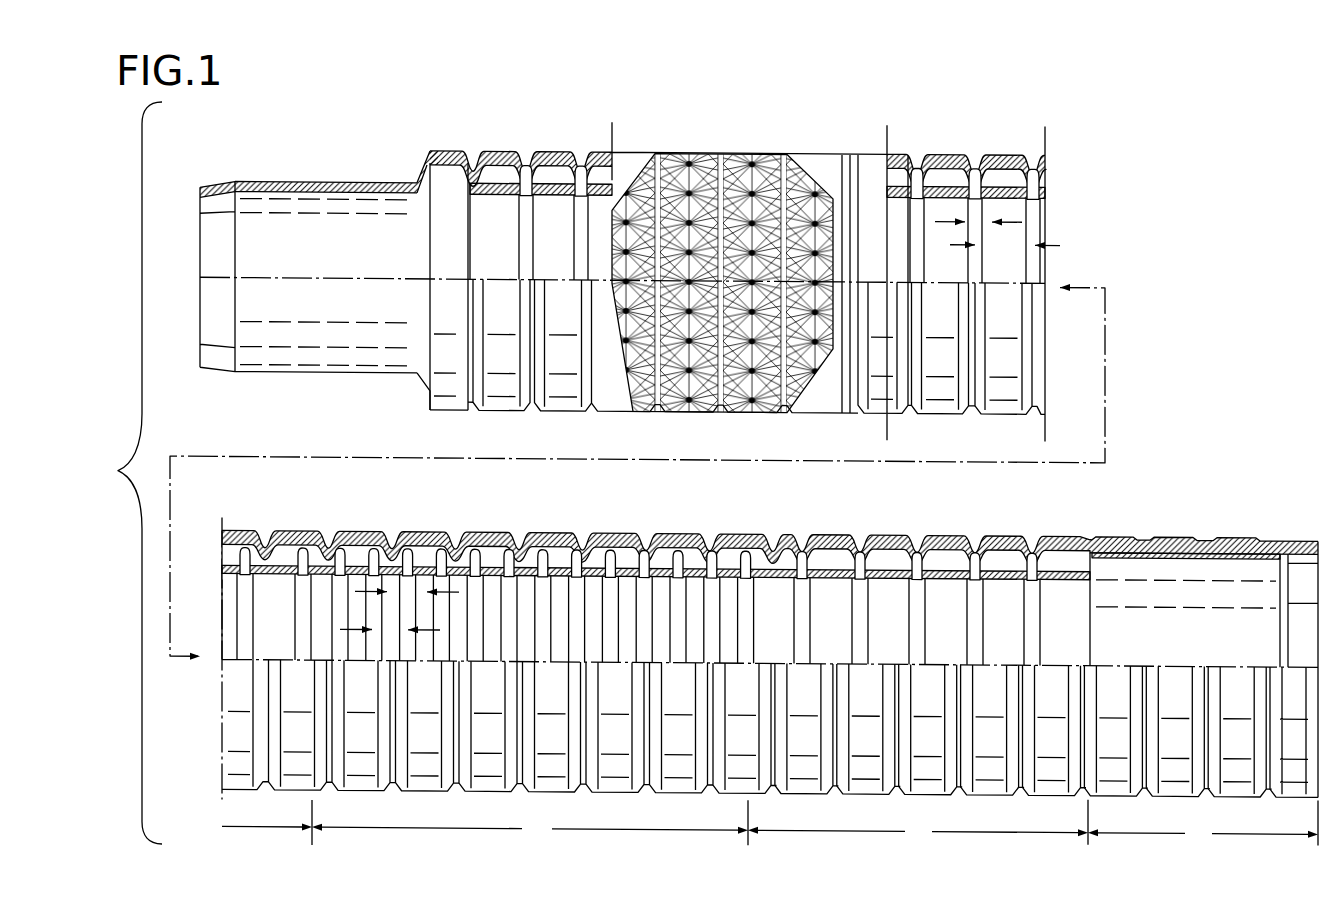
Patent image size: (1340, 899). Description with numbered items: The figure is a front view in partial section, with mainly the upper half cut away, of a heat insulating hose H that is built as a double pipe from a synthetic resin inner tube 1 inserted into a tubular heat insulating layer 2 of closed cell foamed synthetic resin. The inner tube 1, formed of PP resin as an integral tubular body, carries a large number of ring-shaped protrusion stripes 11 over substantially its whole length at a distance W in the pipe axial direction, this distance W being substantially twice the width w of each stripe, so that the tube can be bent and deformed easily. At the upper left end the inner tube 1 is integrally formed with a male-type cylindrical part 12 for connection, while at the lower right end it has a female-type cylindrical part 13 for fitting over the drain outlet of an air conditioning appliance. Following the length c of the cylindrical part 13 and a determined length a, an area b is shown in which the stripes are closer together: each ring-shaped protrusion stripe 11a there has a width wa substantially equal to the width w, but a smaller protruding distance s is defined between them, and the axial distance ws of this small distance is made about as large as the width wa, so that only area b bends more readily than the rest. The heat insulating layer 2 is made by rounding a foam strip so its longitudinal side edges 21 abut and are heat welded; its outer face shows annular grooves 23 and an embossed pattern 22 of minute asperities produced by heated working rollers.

The inner tube 1 is at (496, 182).
The heat insulating layer 2 is at (562, 151).
The ring-shaped protrusion stripes 11 is at (526, 164).
The ring-shaped protrusion stripes 11a is at (477, 550).
The cylindrical part of a male type 12 is at (330, 182).
The cylindrical part of a female type 13 is at (1172, 556).
The longitudinal side edges 21 is at (868, 278).
The pattern of minute asperities 22 is at (692, 175).
The annular grooves 23 is at (845, 155).
The heat insulating hose H is at (1064, 165).
The width of ring-shaped protrusion stripe w is at (978, 202).
The distance between ring-shaped protrusion stripes W is at (1013, 244).
The distance of small distance in pipe axial direction ws is at (392, 629).
The width of ring-shaped protrusion stripe 11a wa is at (408, 591).
The protruding distance s is at (558, 547).
The determined length a is at (918, 820).
The area b is at (485, 822).
The length of the cylindrical part c is at (1203, 822).